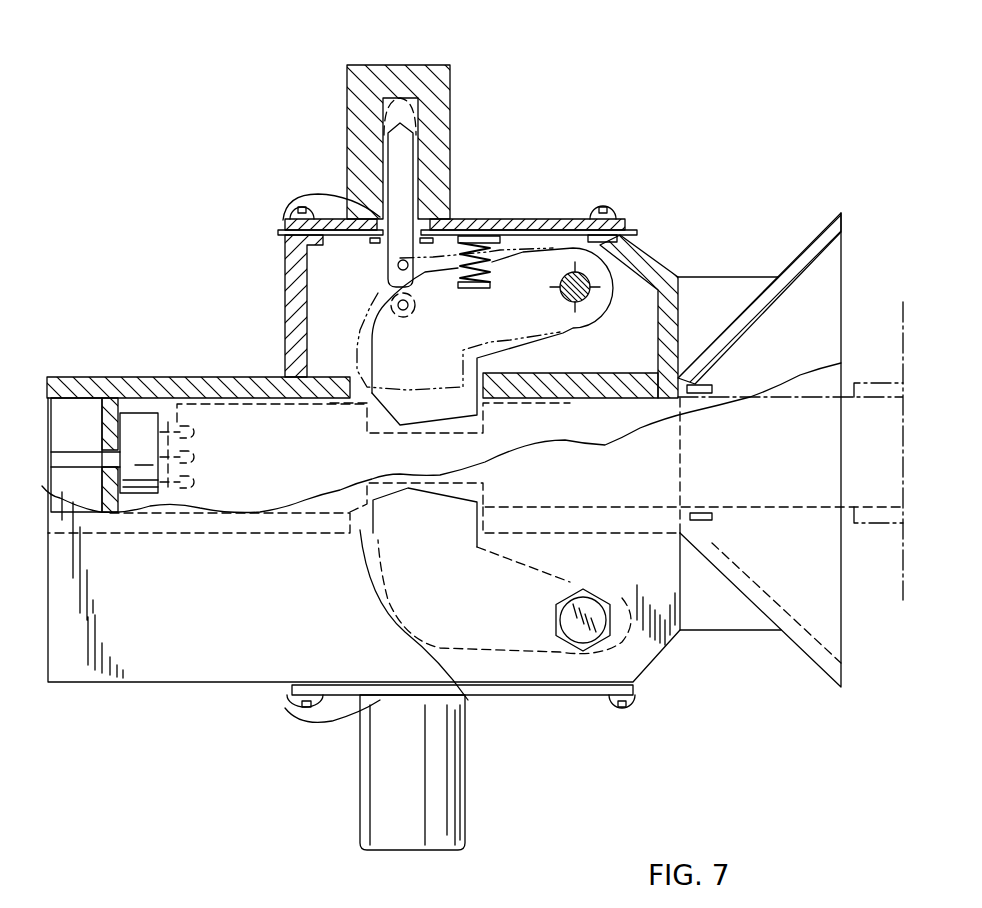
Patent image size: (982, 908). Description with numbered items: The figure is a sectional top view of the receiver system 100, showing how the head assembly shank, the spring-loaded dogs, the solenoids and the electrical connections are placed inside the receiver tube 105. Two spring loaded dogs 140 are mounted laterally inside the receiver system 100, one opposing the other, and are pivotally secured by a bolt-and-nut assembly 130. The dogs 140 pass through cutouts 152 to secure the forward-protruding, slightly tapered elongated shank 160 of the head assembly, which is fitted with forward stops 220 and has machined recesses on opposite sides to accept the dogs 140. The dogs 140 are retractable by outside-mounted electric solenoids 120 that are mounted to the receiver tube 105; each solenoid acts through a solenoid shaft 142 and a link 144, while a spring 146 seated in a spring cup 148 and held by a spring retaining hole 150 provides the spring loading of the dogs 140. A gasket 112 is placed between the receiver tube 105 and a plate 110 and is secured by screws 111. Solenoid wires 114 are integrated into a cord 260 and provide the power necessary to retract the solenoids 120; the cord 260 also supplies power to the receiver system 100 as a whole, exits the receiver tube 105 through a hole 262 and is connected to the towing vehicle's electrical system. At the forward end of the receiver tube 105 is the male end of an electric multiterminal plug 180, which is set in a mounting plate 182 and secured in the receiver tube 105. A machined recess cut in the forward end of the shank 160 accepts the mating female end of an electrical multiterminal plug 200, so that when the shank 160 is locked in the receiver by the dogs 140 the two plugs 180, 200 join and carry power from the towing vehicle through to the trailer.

The receiver system 100 is at (815, 604).
The receiver tube 105 is at (183, 527).
The plate 110 is at (560, 688).
The screws 111 is at (291, 206).
The gasket 112 is at (630, 236).
The solenoid wires 114 is at (335, 720).
The electric solenoids 120 is at (382, 72).
The bolt-and-nut assembly 130 is at (600, 622).
The spring loaded dogs 140 is at (403, 347).
The solenoid shaft 142 is at (400, 165).
The link 144 is at (398, 292).
The spring 146 is at (493, 280).
The spring cup 148 is at (503, 258).
The spring retaining hole 150 is at (493, 283).
The cutouts 152 is at (468, 700).
The shank 160 is at (819, 420).
The electrical multiterminal plug 180 is at (138, 430).
The mounting plate 182 is at (145, 440).
The electrical multiterminal plug 200 is at (213, 430).
The forward stops 220 is at (712, 520).
The cord 260 is at (58, 470).
The hole 262 is at (55, 482).